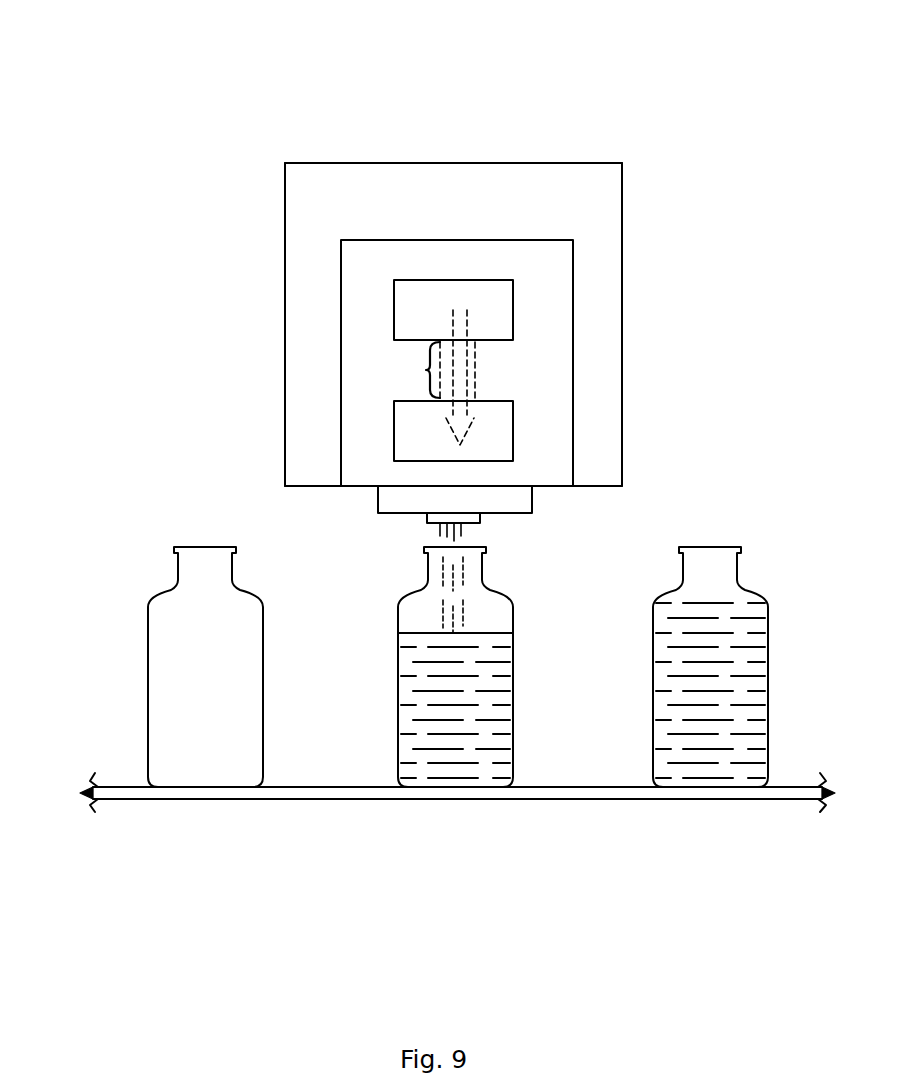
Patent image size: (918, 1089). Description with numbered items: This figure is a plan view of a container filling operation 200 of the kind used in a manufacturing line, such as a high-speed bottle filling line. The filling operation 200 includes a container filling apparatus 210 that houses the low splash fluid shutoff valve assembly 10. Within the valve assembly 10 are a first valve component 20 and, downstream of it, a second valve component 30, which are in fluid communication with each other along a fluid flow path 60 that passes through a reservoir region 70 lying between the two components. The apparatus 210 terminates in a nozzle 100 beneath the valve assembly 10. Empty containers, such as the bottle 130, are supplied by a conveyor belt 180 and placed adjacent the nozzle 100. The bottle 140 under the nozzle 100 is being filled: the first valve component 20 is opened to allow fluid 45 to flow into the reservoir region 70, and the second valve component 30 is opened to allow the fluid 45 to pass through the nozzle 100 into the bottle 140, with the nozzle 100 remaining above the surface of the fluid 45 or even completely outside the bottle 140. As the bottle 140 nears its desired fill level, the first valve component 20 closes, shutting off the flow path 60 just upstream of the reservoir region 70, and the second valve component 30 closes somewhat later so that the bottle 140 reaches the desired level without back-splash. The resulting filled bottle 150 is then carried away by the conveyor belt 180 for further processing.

The container filling operation 200 is at (655, 146).
The container filling apparatus 210 is at (285, 230).
The low splash fluid shutoff valve assembly 10 is at (573, 316).
The first valve component 20 is at (503, 290).
The second valve component 30 is at (497, 437).
The fluid flow path 60 is at (453, 310).
The reservoir region 70 is at (426, 370).
The nozzle 100 is at (405, 522).
The fluid 45 is at (465, 527).
The bottle 130 is at (264, 713).
The bottle 140 is at (513, 713).
The filled bottle 150 is at (768, 713).
The conveyor belt 180 is at (140, 799).